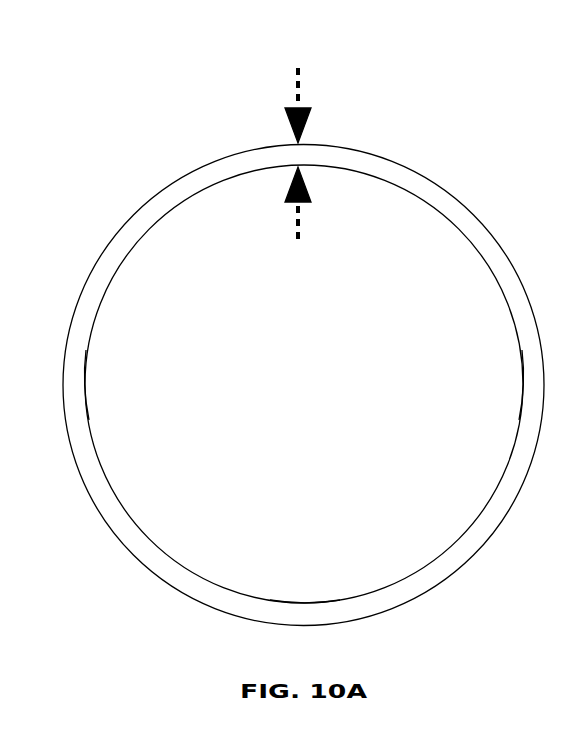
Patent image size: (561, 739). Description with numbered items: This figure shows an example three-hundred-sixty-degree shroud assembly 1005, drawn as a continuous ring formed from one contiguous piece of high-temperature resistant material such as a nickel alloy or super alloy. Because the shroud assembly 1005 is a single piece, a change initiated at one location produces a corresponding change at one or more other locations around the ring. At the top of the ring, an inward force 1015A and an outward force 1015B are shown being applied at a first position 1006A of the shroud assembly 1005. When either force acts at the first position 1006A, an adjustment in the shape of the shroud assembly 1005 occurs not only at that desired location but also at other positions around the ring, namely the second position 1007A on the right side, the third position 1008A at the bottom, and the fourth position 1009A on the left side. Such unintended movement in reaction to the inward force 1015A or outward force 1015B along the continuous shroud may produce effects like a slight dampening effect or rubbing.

The 360-degree shroud assembly 1005 is at (380, 153).
The first position 1006A is at (296, 166).
The second position 1007A is at (522, 378).
The third position 1008A is at (308, 601).
The fourth position 1009A is at (86, 383).
The inward force 1015A is at (297, 92).
The outward force 1015B is at (297, 219).